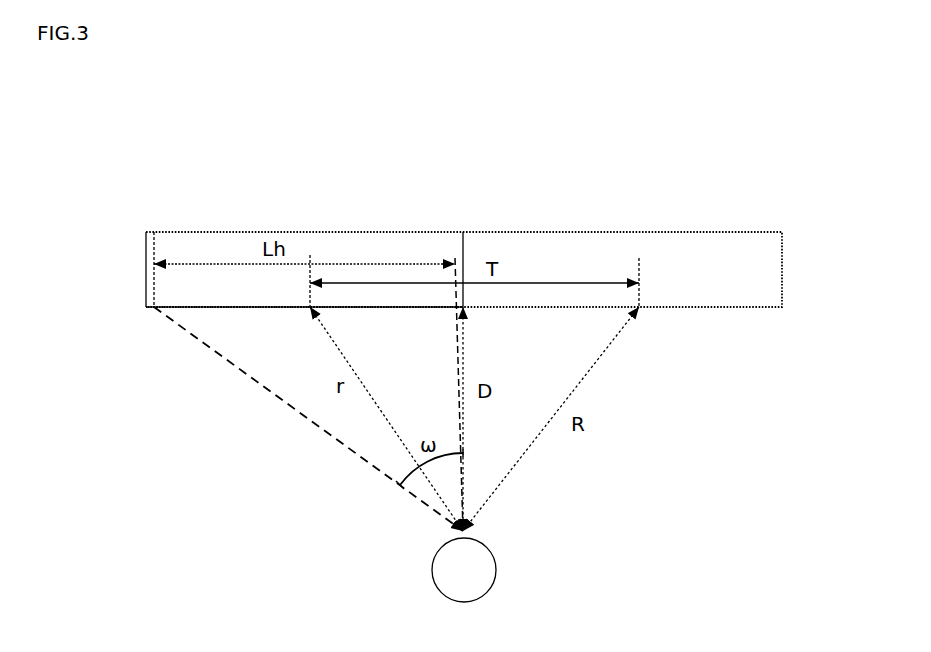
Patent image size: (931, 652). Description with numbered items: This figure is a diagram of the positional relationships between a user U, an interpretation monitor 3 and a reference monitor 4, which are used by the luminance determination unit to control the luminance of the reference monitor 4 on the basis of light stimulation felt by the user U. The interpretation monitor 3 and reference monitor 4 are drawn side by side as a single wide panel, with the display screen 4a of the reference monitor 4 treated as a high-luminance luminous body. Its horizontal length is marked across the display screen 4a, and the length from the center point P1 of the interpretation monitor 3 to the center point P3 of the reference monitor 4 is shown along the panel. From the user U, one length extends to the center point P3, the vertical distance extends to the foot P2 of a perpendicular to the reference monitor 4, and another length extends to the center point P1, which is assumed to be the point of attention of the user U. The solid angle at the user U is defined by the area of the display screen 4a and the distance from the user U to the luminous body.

The interpretation monitor 3 is at (784, 252).
The reference monitor 4 is at (146, 258).
The display screen 4a is at (262, 308).
The center point P1 is at (642, 307).
The foot of a perpendicular P2 is at (465, 308).
The center point P3 is at (308, 308).
The user U is at (496, 570).